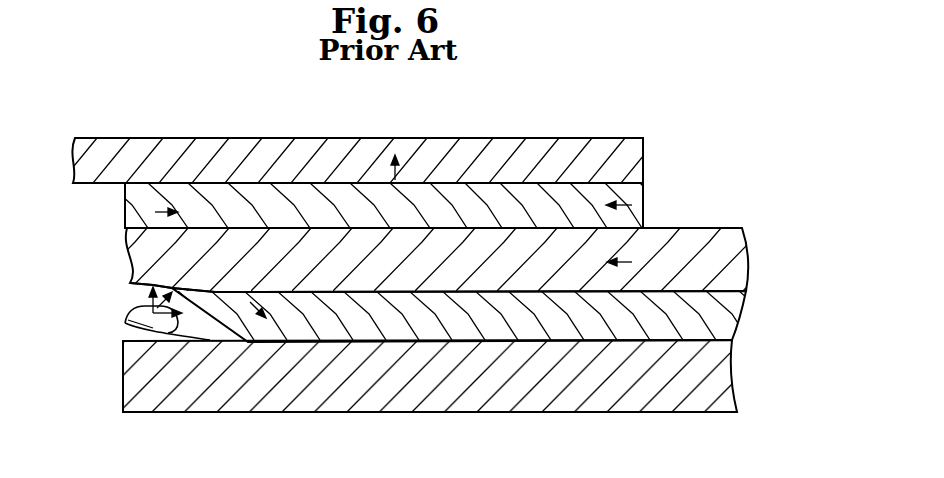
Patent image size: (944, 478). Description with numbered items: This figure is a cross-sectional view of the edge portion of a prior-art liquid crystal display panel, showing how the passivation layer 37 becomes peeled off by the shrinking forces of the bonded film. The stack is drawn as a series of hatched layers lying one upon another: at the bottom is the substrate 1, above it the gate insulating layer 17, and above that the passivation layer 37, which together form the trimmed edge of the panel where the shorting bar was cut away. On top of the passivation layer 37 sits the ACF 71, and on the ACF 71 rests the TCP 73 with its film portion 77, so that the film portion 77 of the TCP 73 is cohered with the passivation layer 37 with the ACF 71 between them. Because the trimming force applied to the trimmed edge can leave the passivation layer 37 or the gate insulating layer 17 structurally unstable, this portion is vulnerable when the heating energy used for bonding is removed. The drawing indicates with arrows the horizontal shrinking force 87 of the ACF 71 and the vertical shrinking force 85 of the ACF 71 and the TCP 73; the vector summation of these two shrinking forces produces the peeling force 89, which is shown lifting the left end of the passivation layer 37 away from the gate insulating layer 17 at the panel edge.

The substrate 1 is at (634, 400).
The gate insulating layer 17 is at (717, 315).
The passivation layer 37 is at (721, 238).
The ACF 71 is at (647, 228).
The TCP 73 is at (607, 137).
The film portion 77 is at (146, 150).
The vertical shrinking force 85 is at (393, 172).
The horizontal shrinking force 87 is at (632, 205).
The peeling force 89 is at (183, 286).